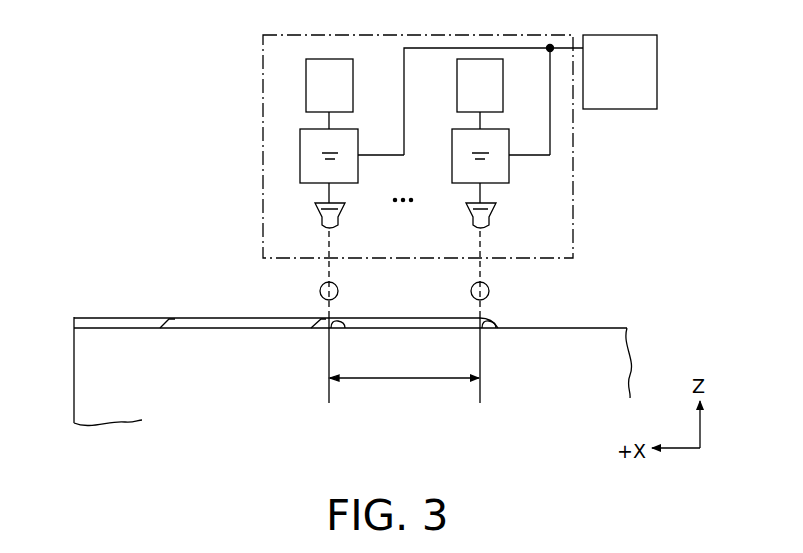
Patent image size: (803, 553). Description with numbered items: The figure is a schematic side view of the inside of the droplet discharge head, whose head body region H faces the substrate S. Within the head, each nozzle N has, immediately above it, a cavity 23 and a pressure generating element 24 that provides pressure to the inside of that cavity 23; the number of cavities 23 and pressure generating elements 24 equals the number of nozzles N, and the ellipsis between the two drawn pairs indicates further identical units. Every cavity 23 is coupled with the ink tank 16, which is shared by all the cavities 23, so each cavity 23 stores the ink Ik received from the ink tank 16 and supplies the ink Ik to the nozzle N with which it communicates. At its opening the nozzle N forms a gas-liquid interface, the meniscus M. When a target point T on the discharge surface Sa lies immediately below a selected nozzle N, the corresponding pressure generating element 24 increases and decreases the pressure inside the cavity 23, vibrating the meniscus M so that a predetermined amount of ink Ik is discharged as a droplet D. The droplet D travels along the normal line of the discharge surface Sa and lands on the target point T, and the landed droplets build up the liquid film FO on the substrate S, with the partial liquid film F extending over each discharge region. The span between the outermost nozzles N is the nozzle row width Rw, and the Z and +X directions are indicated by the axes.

The ink tank 16 is at (636, 88).
The cavity 23 is at (358, 172).
The pressure generating element 24 is at (343, 96).
The head unit H is at (262, 68).
The ink Ik is at (360, 140).
The nozzle N is at (345, 212).
The meniscus M is at (325, 230).
The droplet D is at (338, 291).
The substrate S is at (363, 353).
The discharge surface Sa is at (598, 323).
The partial liquid film F is at (123, 316).
The target point T is at (340, 330).
The nozzle row width Rw is at (404, 392).
The liquid film FO is at (231, 281).